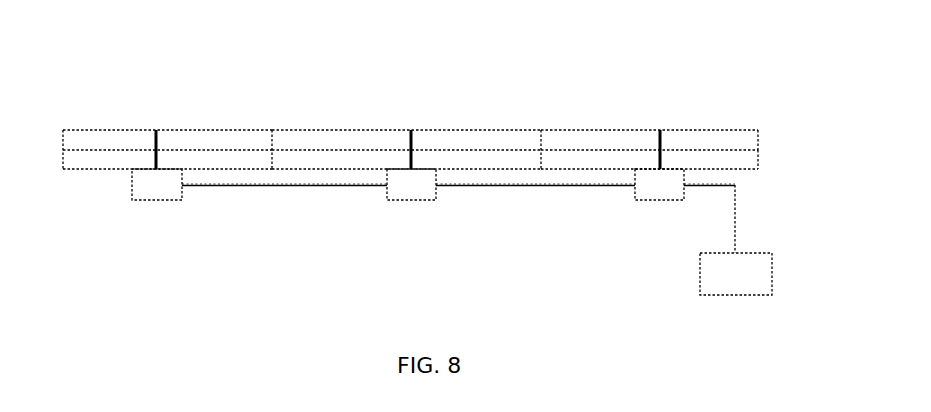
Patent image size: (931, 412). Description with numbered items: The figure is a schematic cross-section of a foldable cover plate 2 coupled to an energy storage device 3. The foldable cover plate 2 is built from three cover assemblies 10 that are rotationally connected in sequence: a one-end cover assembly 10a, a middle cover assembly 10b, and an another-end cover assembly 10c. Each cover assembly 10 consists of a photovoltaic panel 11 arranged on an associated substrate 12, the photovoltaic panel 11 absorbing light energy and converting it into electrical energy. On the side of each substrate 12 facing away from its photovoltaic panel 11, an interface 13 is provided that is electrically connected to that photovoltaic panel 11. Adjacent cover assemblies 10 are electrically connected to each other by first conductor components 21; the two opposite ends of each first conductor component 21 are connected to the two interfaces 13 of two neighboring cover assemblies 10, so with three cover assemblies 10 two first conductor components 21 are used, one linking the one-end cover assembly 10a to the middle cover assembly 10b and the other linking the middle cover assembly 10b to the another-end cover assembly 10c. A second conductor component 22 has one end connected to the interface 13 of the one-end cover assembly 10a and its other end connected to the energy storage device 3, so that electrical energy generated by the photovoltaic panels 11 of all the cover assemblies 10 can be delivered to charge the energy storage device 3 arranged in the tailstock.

The foldable cover plate 2 is at (108, 182).
The energy storage device 3 is at (753, 275).
The cover assembly 10 is at (631, 87).
The one-end cover assembly 10a is at (597, 144).
The middle cover assembly 10b is at (382, 144).
The another-end cover assembly 10c is at (192, 145).
The photovoltaic panel 11 is at (730, 142).
The substrate 12 is at (732, 162).
The interface 13 is at (156, 186).
The first conductor component 21 is at (268, 186).
The second conductor component 22 is at (738, 218).